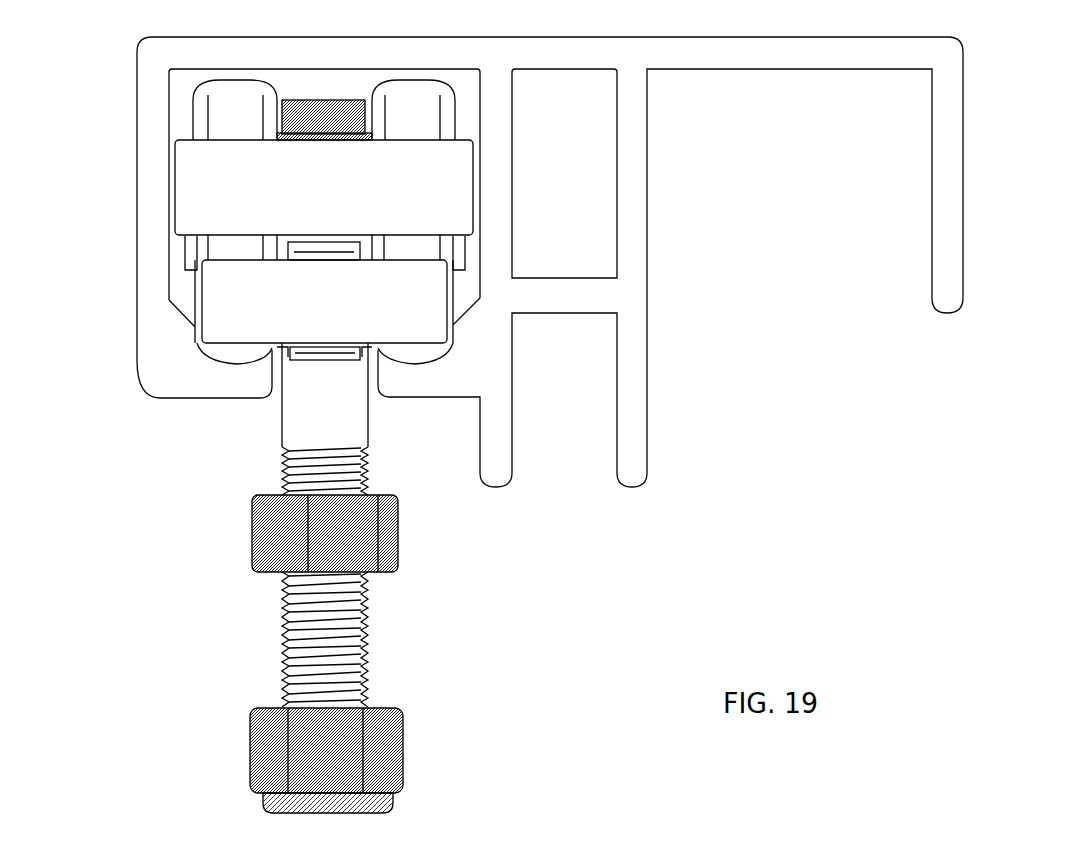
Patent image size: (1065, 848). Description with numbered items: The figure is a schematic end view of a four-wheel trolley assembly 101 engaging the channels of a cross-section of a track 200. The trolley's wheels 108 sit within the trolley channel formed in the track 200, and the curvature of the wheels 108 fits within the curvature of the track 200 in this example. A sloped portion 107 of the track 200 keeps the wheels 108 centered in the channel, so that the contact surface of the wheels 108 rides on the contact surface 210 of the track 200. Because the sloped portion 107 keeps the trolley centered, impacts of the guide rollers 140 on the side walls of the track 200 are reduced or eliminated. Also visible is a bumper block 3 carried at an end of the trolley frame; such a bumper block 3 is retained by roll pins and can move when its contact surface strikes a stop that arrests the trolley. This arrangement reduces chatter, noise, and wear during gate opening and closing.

The track 200 is at (953, 177).
The wheels 108 is at (216, 117).
The guide rollers 140 is at (196, 200).
The bumper block 3 is at (222, 293).
The sloped portion 107 is at (182, 322).
The contact surface 210 is at (237, 363).
The trolley assembly 101 is at (403, 472).